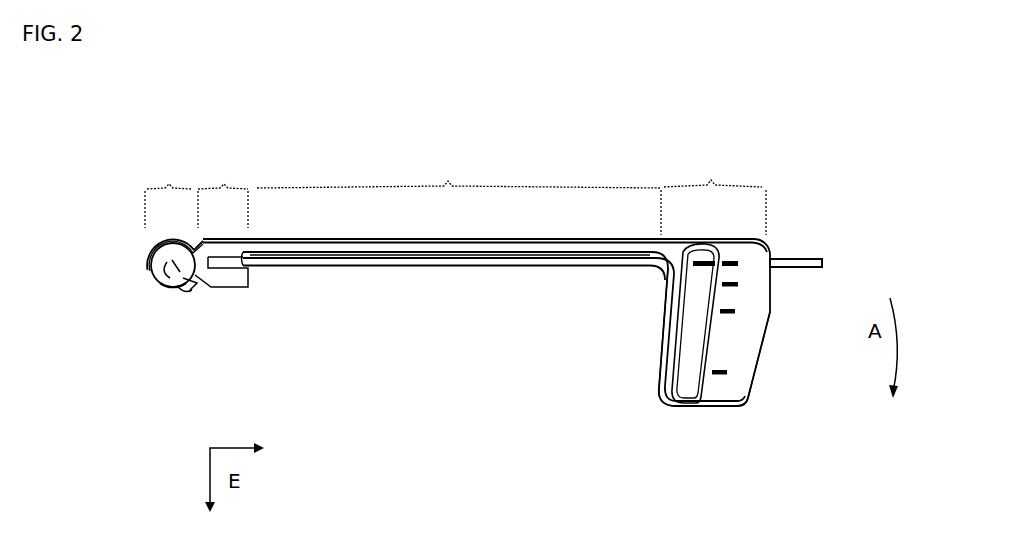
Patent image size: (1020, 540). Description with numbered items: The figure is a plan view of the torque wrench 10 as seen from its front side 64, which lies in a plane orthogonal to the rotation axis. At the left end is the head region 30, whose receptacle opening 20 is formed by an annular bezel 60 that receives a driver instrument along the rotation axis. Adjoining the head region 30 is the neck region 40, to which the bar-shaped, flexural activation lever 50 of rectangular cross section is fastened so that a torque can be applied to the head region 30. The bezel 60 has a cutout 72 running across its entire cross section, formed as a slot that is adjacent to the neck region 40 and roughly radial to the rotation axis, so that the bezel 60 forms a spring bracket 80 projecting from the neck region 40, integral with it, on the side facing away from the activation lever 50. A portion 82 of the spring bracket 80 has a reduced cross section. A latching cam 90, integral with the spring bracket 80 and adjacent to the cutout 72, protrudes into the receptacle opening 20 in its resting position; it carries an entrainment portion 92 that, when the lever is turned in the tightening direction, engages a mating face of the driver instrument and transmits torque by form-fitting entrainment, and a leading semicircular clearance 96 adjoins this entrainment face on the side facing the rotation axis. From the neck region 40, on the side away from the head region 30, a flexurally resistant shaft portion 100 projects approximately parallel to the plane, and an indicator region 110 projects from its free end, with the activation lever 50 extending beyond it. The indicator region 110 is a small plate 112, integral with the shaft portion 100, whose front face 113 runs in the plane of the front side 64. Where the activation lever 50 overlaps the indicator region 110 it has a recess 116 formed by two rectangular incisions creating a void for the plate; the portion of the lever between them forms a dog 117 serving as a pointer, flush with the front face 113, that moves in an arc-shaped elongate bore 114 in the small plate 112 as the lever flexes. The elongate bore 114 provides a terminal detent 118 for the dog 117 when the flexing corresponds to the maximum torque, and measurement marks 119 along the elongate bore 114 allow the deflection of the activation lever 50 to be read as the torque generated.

The torque wrench 10 is at (365, 383).
The receptacle opening 20 is at (160, 284).
The head region 30 is at (168, 186).
The neck region 40 is at (223, 186).
The activation lever 50 is at (461, 268).
The bezel 60 is at (150, 242).
The front side 64 is at (397, 245).
The cutout 72 is at (199, 290).
The spring bracket 80 is at (151, 264).
The portion of reduced cross section 82 is at (150, 272).
The latching cam 90 is at (176, 266).
The entrainment portion 92 is at (190, 289).
The semicircular clearance 96 is at (186, 293).
The shaft portion 100 is at (458, 166).
The indicator region 110 is at (713, 189).
The small plate 112 is at (713, 401).
The front face 113 is at (732, 395).
The elongate bore 114 is at (693, 347).
The recess 116 is at (768, 262).
The dog 117 is at (712, 257).
The terminal detent 118 is at (672, 405).
The measurement marks 119 is at (771, 305).